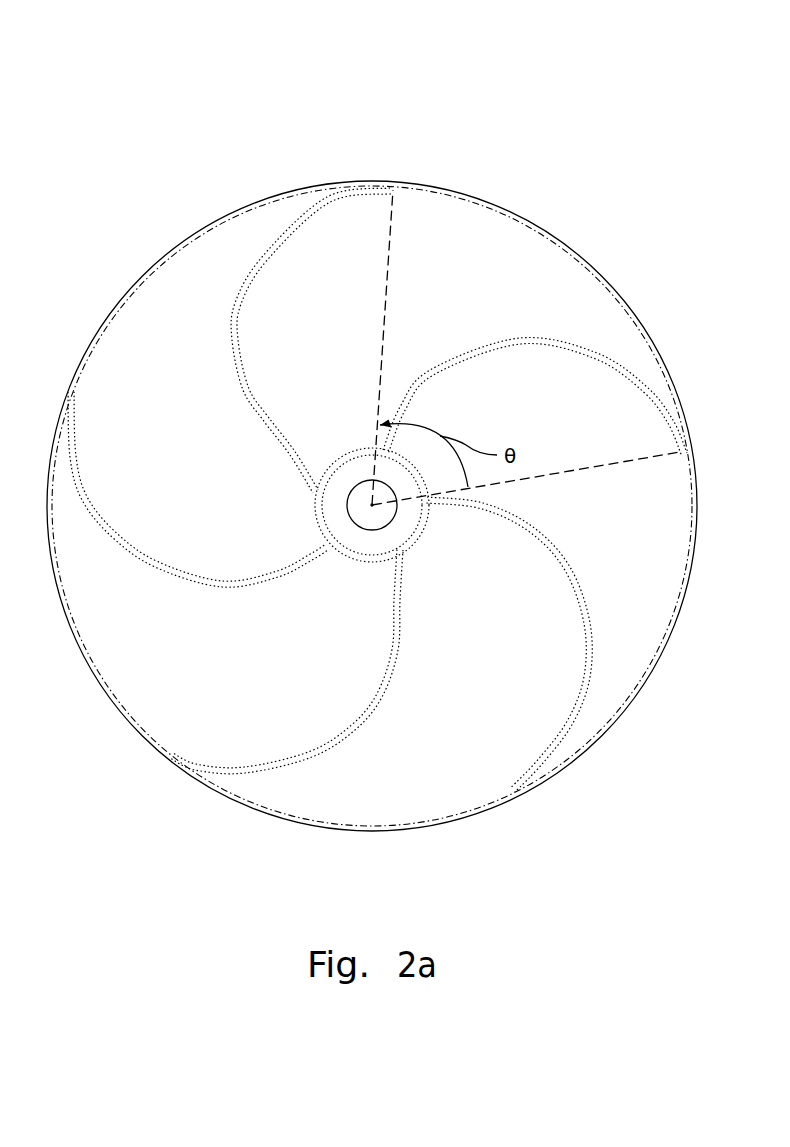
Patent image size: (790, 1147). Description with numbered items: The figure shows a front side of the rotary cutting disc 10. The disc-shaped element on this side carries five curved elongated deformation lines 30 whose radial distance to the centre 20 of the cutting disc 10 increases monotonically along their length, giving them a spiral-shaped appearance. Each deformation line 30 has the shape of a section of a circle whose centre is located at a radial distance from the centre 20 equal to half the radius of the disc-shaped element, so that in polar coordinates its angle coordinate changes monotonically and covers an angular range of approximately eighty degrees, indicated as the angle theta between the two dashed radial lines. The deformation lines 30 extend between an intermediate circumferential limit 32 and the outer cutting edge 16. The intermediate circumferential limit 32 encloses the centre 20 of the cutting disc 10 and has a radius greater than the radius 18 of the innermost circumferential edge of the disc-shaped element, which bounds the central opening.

The rotary cutting disc 10 is at (225, 157).
The cutting edge 16 is at (597, 270).
The radius of the innermost circumferential edges 18 is at (352, 518).
The centre 20 is at (373, 500).
The deformation line 30 is at (573, 728).
The intermediate circumferential limit 32 is at (420, 535).